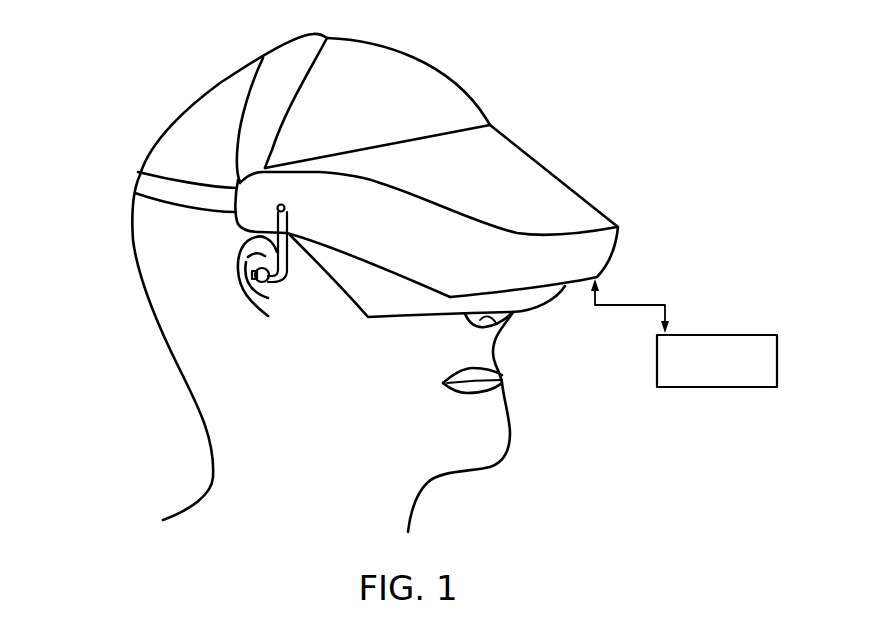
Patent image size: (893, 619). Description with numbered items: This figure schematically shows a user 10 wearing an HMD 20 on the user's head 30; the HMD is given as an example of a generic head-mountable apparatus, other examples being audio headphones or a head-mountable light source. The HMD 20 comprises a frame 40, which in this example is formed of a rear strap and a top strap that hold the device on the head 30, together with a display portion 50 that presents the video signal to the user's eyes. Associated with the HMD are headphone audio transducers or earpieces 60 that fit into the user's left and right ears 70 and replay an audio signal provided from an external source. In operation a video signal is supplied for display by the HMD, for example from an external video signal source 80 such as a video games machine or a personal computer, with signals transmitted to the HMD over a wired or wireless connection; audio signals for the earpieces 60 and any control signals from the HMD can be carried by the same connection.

The user 10 is at (106, 367).
The HMD 20 is at (571, 165).
The user's head 30 is at (138, 257).
The frame 40 is at (138, 181).
The display portion 50 is at (598, 211).
The earpieces 60 is at (283, 281).
The ears 70 is at (236, 258).
The external video signal source 80 is at (748, 334).